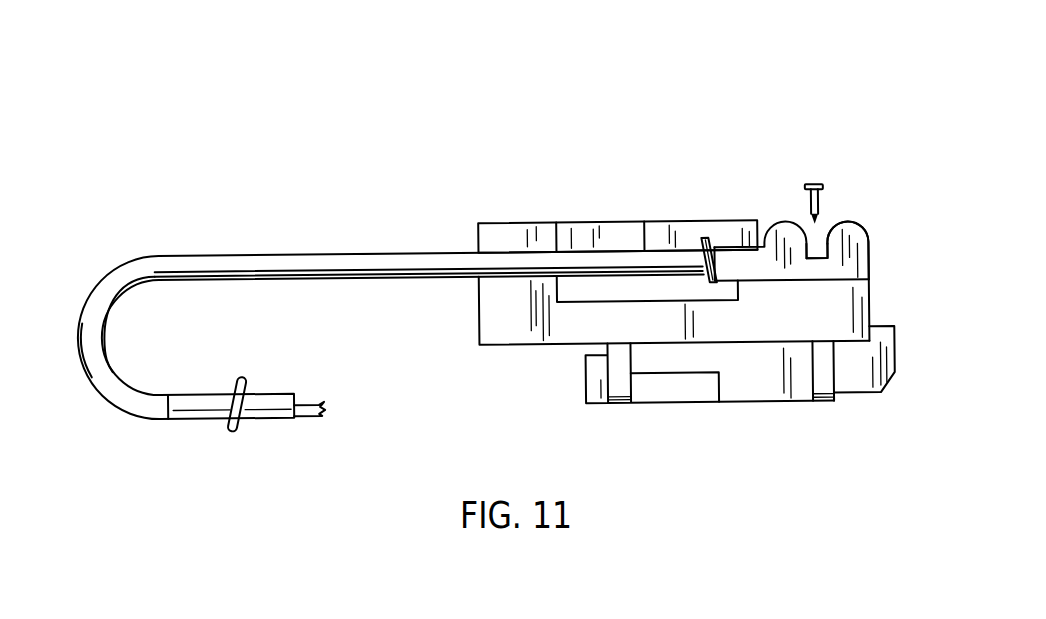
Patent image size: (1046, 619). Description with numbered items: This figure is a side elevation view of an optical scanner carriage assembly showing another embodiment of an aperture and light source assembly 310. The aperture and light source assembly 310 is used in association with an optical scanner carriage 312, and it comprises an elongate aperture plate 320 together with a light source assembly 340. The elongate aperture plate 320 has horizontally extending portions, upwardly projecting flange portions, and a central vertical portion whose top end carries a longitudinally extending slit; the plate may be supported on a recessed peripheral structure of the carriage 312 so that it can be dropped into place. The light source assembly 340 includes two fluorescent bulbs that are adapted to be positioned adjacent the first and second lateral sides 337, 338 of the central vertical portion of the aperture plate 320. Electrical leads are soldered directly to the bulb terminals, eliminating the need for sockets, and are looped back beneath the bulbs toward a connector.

The aperture and light source assembly 310 is at (876, 102).
The optical scanner carriage 312 is at (877, 318).
The elongate aperture plate 320 is at (879, 251).
The first lateral side 337 is at (826, 221).
The second lateral side 338 is at (811, 234).
The light source assembly 340 is at (866, 206).